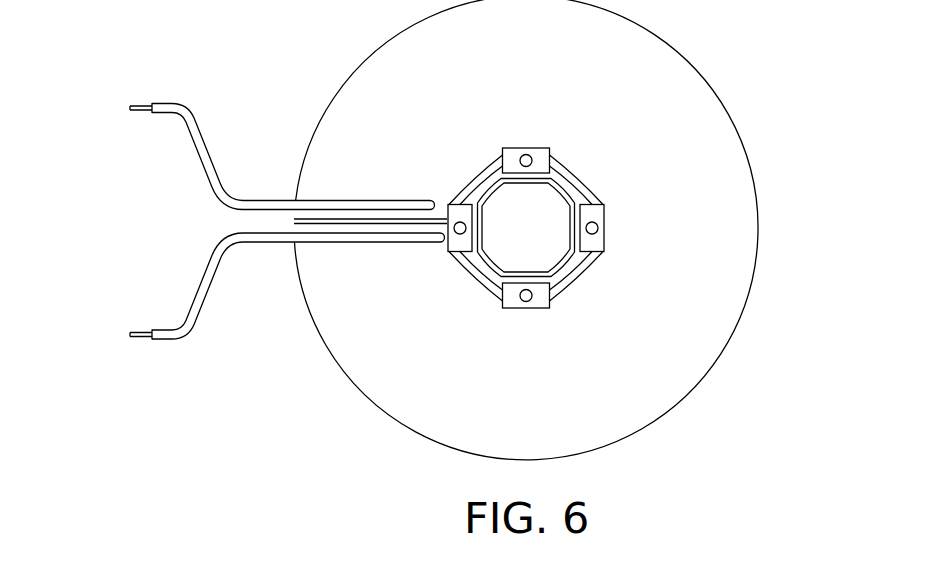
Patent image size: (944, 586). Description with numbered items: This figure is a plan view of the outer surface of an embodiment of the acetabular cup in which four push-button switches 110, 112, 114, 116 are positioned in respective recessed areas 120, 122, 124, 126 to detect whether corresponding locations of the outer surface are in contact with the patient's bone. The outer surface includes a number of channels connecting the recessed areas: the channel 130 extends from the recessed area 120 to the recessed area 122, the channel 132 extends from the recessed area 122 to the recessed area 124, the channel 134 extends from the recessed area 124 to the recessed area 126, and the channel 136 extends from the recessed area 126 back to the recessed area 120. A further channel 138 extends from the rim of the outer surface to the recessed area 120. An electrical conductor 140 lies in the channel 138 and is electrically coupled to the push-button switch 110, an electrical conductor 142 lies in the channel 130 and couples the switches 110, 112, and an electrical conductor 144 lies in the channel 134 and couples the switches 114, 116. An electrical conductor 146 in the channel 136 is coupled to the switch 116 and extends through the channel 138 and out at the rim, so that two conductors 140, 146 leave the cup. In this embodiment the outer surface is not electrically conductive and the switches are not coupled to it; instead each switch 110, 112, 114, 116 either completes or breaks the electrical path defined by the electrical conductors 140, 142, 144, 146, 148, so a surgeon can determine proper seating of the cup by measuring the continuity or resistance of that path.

The push-button switch 110 is at (445, 206).
The push-button switch 112 is at (540, 328).
The push-button switch 114 is at (631, 225).
The push-button switch 116 is at (527, 127).
The recessed area 120 is at (447, 251).
The recessed area 122 is at (526, 314).
The recessed area 124 is at (606, 237).
The recessed area 126 is at (536, 148).
The channel 130 is at (490, 302).
The channel 132 is at (594, 266).
The channel 134 is at (590, 176).
The channel 136 is at (478, 162).
The channel 138 is at (294, 239).
The electrical conductor 140 is at (476, 278).
The electrical conductor 142 is at (573, 274).
The electrical conductor 144 is at (565, 166).
The electrical conductor 146 is at (190, 102).
The electrical conductor 148 is at (163, 330).